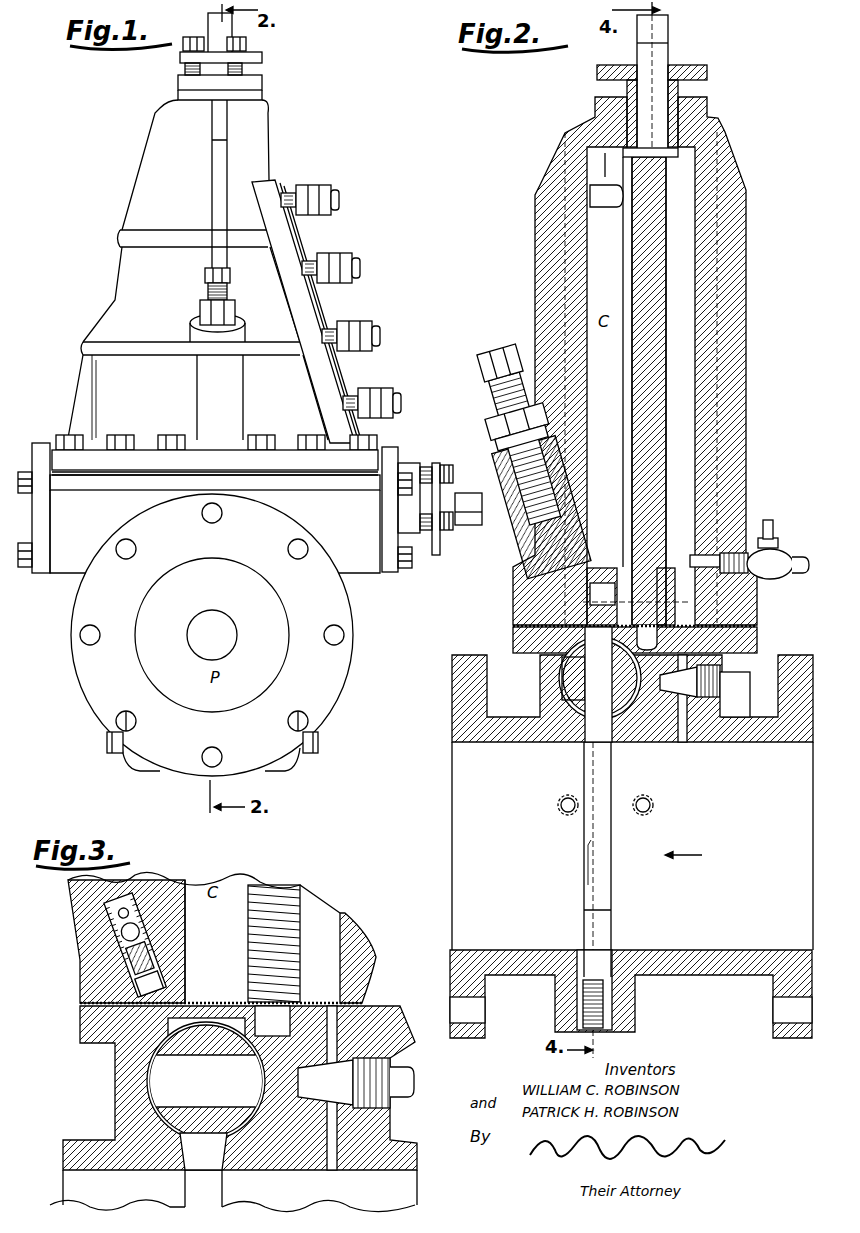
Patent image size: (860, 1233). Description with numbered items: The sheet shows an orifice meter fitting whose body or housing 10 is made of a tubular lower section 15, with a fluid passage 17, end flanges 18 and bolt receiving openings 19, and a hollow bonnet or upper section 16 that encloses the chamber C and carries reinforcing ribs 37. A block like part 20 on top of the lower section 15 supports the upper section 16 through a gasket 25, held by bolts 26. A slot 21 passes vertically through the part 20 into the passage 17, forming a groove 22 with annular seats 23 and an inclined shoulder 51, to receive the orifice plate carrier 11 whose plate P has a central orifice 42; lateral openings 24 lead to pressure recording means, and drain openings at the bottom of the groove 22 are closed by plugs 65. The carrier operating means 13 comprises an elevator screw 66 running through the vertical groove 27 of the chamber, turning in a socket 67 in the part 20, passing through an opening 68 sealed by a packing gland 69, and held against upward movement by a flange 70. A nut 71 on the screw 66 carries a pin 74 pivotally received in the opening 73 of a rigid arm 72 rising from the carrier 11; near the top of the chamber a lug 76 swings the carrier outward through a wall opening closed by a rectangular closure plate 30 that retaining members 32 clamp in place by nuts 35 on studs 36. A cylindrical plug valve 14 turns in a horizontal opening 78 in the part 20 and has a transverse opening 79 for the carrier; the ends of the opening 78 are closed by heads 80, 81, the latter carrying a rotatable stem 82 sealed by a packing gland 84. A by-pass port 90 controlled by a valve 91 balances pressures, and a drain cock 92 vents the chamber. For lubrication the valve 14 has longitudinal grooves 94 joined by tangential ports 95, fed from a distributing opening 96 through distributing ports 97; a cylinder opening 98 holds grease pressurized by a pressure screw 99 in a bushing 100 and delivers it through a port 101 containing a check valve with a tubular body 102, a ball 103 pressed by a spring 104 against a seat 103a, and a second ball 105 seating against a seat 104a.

In FIG. 1, the body or housing 10 is at (355, 615).
In FIG. 2, the body or housing 10 is at (452, 712).
In FIG. 2, the orifice plate carrier 11 is at (582, 897).
In FIG. 2, the carrier operating means 13 is at (672, 262).
In FIG. 2, the valve 14 is at (560, 656).
In FIG. 3, the valve 14 is at (168, 1133).
In FIG. 1, the lower section 15 is at (344, 670).
In FIG. 2, the lower section 15 is at (727, 965).
In FIG. 1, the bonnet or upper section 16 is at (110, 295).
In FIG. 2, the bonnet or upper section 16 is at (746, 433).
In FIG. 1, the fluid passage 17 is at (283, 605).
In FIG. 2, the fluid passage 17 is at (477, 742).
In FIG. 3, the fluid passage 17 is at (415, 1175).
In FIG. 1, the flanges 18 is at (320, 674).
In FIG. 2, the flanges 18 is at (452, 977).
In FIG. 1, the bolt receiving openings 19 is at (343, 636).
In FIG. 2, the bolt receiving openings 19 is at (482, 1000).
In FIG. 1, the flange or block like part 20 is at (215, 524).
In FIG. 2, the flange or block like part 20 is at (545, 697).
In FIG. 3, the flange or block like part 20 is at (115, 1107).
In FIG. 3, the slot 21 is at (218, 1153).
In FIG. 2, the recess or groove 22 is at (610, 998).
In FIG. 2, the annular seats 23 is at (610, 950).
In FIG. 3, the annular seats 23 is at (190, 1160).
In FIG. 2, the lateral openings 24 is at (655, 805).
In FIG. 2, the gasket 25 is at (520, 625).
In FIG. 3, the gasket 25 is at (80, 1001).
In FIG. 1, the screws or bolts 26 is at (122, 440).
In FIG. 2, the vertical recess or groove 27 is at (690, 372).
In FIG. 3, the vertical recess or groove 27 is at (345, 940).
In FIG. 1, the closure plate 30 is at (297, 237).
In FIG. 1, the retaining members 32 is at (306, 190).
In FIG. 1, the nuts 35 is at (352, 280).
In FIG. 1, the studs 36 is at (382, 334).
In FIG. 1, the reinforcing ribs 37 is at (142, 345).
In FIG. 2, the reinforcing ribs 37 is at (543, 283).
In FIG. 1, the central orifice 42 is at (236, 638).
In FIG. 2, the central orifice 42 is at (582, 872).
In FIG. 2, the inclined shoulder 51 is at (617, 742).
In FIG. 1, the plugs 65 is at (318, 742).
In FIG. 1, the elevator screw 66 is at (228, 30).
In FIG. 2, the elevator screw 66 is at (660, 405).
In FIG. 3, the elevator screw 66 is at (300, 918).
In FIG. 2, the socket 67 is at (647, 640).
In FIG. 3, the socket 67 is at (300, 1007).
In FIG. 2, the opening 68 is at (666, 135).
In FIG. 1, the packing gland 69 is at (258, 58).
In FIG. 2, the packing gland 69 is at (680, 105).
In FIG. 2, the flange 70 is at (690, 150).
In FIG. 2, the follower or nut 71 is at (665, 570).
In FIG. 2, the rigid arm 72 is at (598, 708).
In FIG. 2, the transverse opening 73 is at (606, 570).
In FIG. 2, the stud or pin 74 is at (595, 568).
In FIG. 2, the lug 76 is at (593, 197).
In FIG. 3, the cylindrical opening 78 is at (152, 1080).
In FIG. 2, the transverse slot or opening 79 is at (600, 693).
In FIG. 3, the transverse slot or opening 79 is at (206, 1081).
In FIG. 1, the head 80 is at (45, 575).
In FIG. 1, the head or cap 81 is at (390, 574).
In FIG. 1, the rotatable stem 82 is at (465, 525).
In FIG. 1, the packing gland 84 is at (435, 556).
In FIG. 2, the by-pass port 90 is at (677, 742).
In FIG. 3, the by-pass port 90 is at (335, 1032).
In FIG. 2, the valve 91 is at (715, 742).
In FIG. 3, the valve 91 is at (356, 1083).
In FIG. 2, the drain cock 92 is at (770, 553).
In FIG. 2, the longitudinal grooves 94 is at (577, 703).
In FIG. 3, the longitudinal grooves 94 is at (233, 1023).
In FIG. 2, the transverse or tangential ports 95 is at (558, 668).
In FIG. 3, the transverse or tangential ports 95 is at (193, 1027).
In FIG. 3, the lubricant distributing opening 96 is at (100, 1021).
In FIG. 3, the distributing ports 97 is at (157, 1028).
In FIG. 2, the cylinder opening 98 is at (520, 556).
In FIG. 3, the cylinder opening 98 is at (72, 896).
In FIG. 1, the pressure screw 99 is at (228, 295).
In FIG. 2, the pressure screw 99 is at (483, 405).
In FIG. 1, the bushing 100 is at (236, 312).
In FIG. 2, the bushing 100 is at (483, 441).
In FIG. 2, the port 101 is at (520, 591).
In FIG. 3, the port 101 is at (157, 947).
In FIG. 2, the tubular body 102 is at (518, 571).
In FIG. 3, the tubular body 102 is at (110, 933).
In FIG. 3, the ball 103 is at (157, 927).
In FIG. 3, the seat 103a is at (167, 892).
In FIG. 3, the spring 104 is at (113, 953).
In FIG. 3, the seat 104a is at (133, 900).
In FIG. 3, the second ball 105 is at (110, 910).